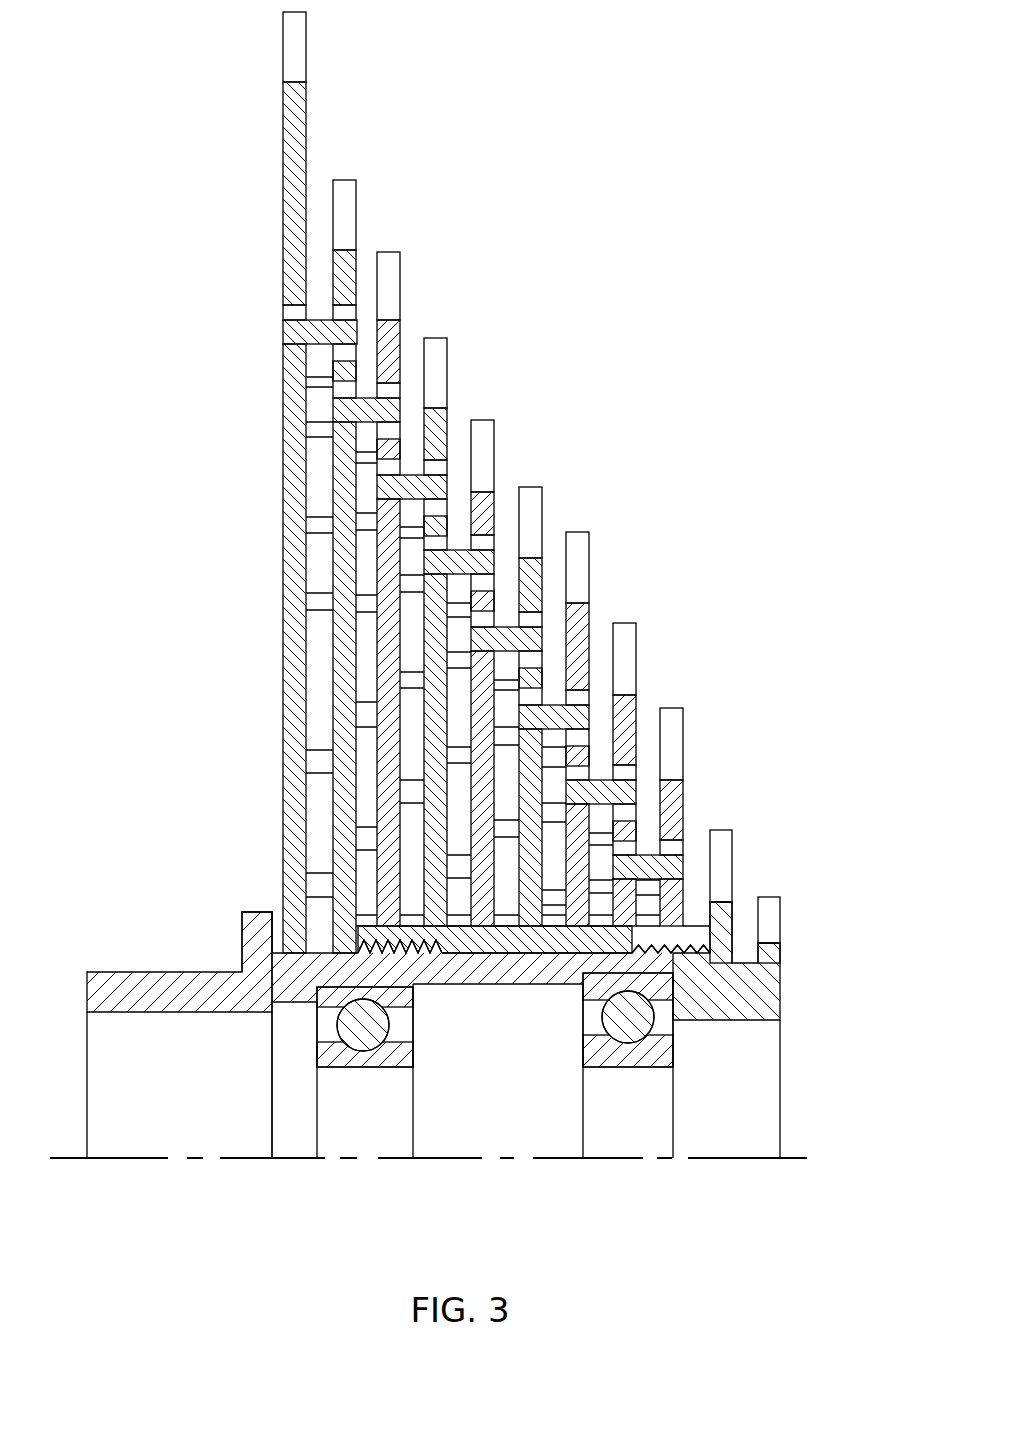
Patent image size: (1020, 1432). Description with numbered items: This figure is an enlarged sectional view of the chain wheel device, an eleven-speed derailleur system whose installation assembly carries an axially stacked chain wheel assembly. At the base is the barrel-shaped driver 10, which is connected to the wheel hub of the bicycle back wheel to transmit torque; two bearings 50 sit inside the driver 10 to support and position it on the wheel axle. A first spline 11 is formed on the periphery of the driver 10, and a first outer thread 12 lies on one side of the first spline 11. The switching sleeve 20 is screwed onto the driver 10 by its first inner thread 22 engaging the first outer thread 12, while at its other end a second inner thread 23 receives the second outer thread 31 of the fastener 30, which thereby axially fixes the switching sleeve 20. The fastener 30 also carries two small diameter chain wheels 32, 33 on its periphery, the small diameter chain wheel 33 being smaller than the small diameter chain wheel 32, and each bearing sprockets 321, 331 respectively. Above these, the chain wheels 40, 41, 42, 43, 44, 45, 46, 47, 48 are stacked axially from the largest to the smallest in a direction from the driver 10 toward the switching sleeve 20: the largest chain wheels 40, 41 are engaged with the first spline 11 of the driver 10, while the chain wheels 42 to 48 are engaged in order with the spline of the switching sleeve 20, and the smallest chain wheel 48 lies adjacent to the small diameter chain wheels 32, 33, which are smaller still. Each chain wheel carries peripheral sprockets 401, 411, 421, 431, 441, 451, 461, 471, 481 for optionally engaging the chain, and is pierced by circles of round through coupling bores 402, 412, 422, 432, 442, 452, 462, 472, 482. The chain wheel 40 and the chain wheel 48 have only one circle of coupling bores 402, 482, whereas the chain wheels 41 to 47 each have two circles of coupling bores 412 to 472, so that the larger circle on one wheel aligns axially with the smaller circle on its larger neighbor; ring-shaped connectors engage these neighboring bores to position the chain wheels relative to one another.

The driver 10 is at (140, 980).
The first spline 11 is at (293, 962).
The first outer thread 12 is at (310, 885).
The switching sleeve 20 is at (518, 954).
The first inner thread 22 is at (390, 943).
The second inner thread 23 is at (739, 1003).
The fastener 30 is at (770, 1000).
The second outer thread 31 is at (703, 950).
The small diameter chain wheel 32 is at (715, 907).
The sprockets 321 is at (722, 840).
The small diameter chain wheel 33 is at (768, 946).
The sprockets 331 is at (770, 905).
The chain wheel 40 is at (300, 95).
The sprockets 401 is at (300, 28).
The coupling bores 402 is at (290, 312).
The chain wheel 41 is at (345, 252).
The sprockets 411 is at (352, 190).
The coupling bores 412 is at (337, 312).
The chain wheel 42 is at (387, 325).
The sprockets 421 is at (388, 265).
The coupling bores 422 is at (393, 392).
The chain wheel 43 is at (433, 412).
The sprockets 431 is at (440, 345).
The coupling bores 432 is at (440, 468).
The chain wheel 44 is at (480, 495).
The sprockets 441 is at (486, 425).
The coupling bores 442 is at (483, 540).
The chain wheel 45 is at (528, 560).
The sprockets 451 is at (535, 495).
The coupling bores 452 is at (537, 612).
The chain wheel 46 is at (576, 608).
The sprockets 461 is at (583, 545).
The coupling bores 462 is at (581, 695).
The chain wheel 47 is at (622, 698).
The sprockets 471 is at (630, 635).
The coupling bores 472 is at (630, 772).
The chain wheel 48 is at (670, 782).
The sprockets 481 is at (675, 718).
The coupling bores 482 is at (677, 847).
The bearings 50 is at (353, 1060).